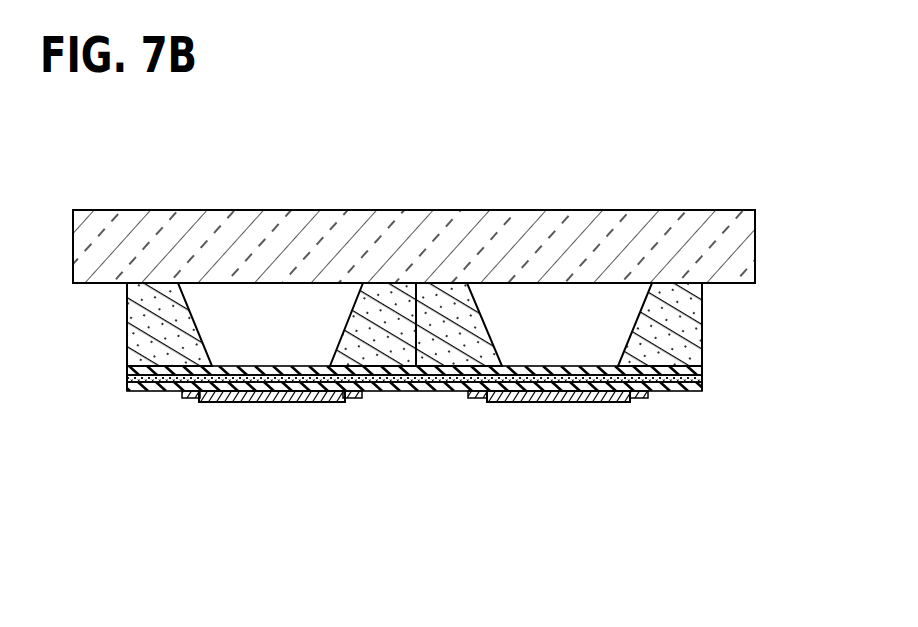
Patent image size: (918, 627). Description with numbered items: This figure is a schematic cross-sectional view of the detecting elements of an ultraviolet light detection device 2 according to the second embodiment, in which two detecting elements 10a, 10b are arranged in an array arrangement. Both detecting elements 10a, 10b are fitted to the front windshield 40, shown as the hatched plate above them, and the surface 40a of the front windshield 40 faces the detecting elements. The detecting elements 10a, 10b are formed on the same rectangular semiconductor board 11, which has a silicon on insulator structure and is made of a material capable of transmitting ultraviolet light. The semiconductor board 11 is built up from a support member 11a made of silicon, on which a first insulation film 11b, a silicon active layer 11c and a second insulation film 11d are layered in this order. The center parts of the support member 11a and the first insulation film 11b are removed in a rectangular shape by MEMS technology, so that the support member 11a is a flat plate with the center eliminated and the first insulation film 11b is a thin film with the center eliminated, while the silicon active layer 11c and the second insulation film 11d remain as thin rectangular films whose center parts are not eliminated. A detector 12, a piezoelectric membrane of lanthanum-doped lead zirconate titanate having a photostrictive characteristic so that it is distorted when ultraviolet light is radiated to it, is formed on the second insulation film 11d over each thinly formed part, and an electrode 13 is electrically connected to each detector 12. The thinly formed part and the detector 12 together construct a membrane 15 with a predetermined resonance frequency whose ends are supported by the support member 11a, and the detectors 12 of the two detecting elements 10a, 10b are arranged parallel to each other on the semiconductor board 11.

The ultraviolet light detection device 2 is at (451, 402).
The detecting element 10a is at (135, 413).
The detecting element 10b is at (667, 412).
The semiconductor board 11 is at (476, 346).
The support member 11a is at (683, 315).
The first insulation film 11b is at (682, 367).
The silicon active layer 11c is at (693, 378).
The second insulation film 11d is at (690, 390).
The detector 12 is at (275, 402).
The electrode 13 is at (195, 400).
The membrane 15 is at (272, 360).
The front windshield 40 is at (398, 235).
The lower surface of support plate 40a is at (98, 284).